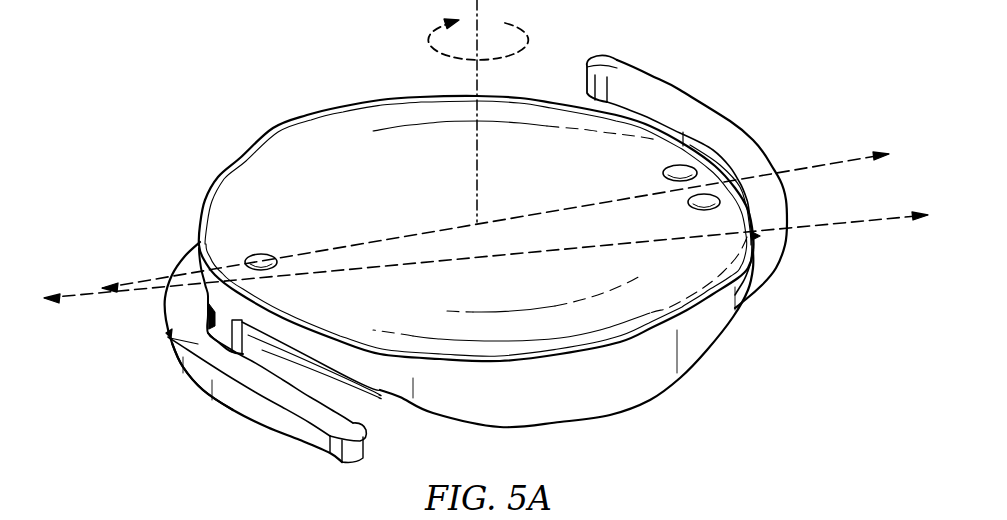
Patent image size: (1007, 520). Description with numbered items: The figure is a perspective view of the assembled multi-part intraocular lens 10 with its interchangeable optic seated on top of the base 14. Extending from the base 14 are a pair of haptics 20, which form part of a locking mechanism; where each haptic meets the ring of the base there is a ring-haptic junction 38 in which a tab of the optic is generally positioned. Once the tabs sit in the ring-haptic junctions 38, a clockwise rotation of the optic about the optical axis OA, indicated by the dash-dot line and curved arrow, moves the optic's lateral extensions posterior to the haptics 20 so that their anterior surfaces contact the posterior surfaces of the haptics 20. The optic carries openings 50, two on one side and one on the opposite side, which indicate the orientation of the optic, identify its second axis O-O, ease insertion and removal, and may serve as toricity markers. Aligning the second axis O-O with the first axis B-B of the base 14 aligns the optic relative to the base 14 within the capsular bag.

The intraocular lens 10 is at (278, 75).
The base 14 is at (382, 392).
The haptics 20 is at (168, 336).
The ring-haptic junctions 38 is at (252, 360).
The openings 50 is at (258, 254).
The optical axis OA is at (477, 80).
The second axis (O-O) O is at (496, 218).
The first axis (B-B) B is at (488, 256).